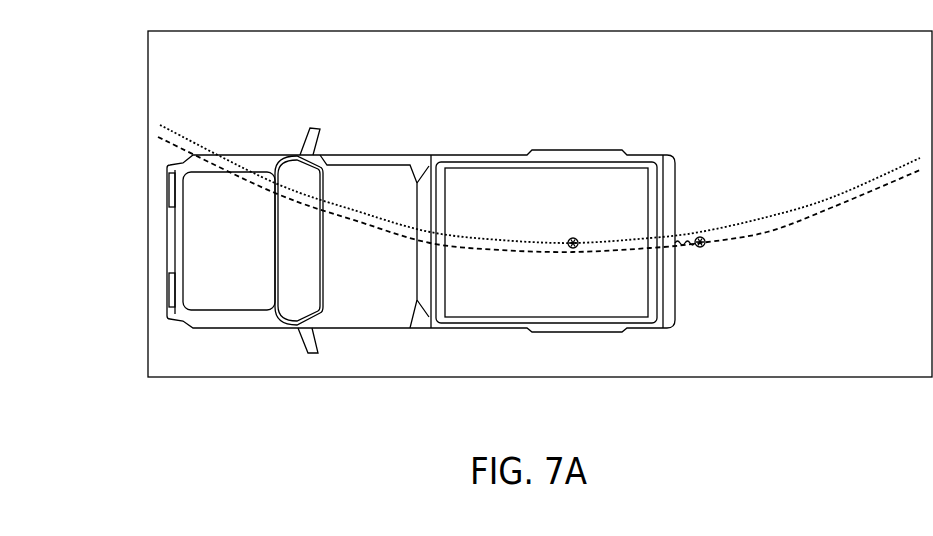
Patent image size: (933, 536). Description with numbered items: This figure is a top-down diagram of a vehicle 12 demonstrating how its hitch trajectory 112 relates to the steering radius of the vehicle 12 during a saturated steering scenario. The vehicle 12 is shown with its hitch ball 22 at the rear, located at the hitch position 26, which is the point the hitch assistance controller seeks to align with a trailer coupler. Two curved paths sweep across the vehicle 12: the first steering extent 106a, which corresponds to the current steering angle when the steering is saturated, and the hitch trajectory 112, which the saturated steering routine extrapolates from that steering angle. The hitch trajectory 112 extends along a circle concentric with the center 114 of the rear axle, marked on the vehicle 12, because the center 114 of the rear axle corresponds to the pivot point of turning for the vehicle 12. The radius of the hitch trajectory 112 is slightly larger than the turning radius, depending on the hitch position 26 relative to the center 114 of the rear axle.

The vehicle 12 is at (190, 273).
The hitch ball 22 is at (752, 272).
The hitch position 26 is at (702, 247).
The first steering extent 106a is at (767, 217).
The hitch trajectory 112 is at (835, 207).
The center of rear axle 114 is at (573, 238).